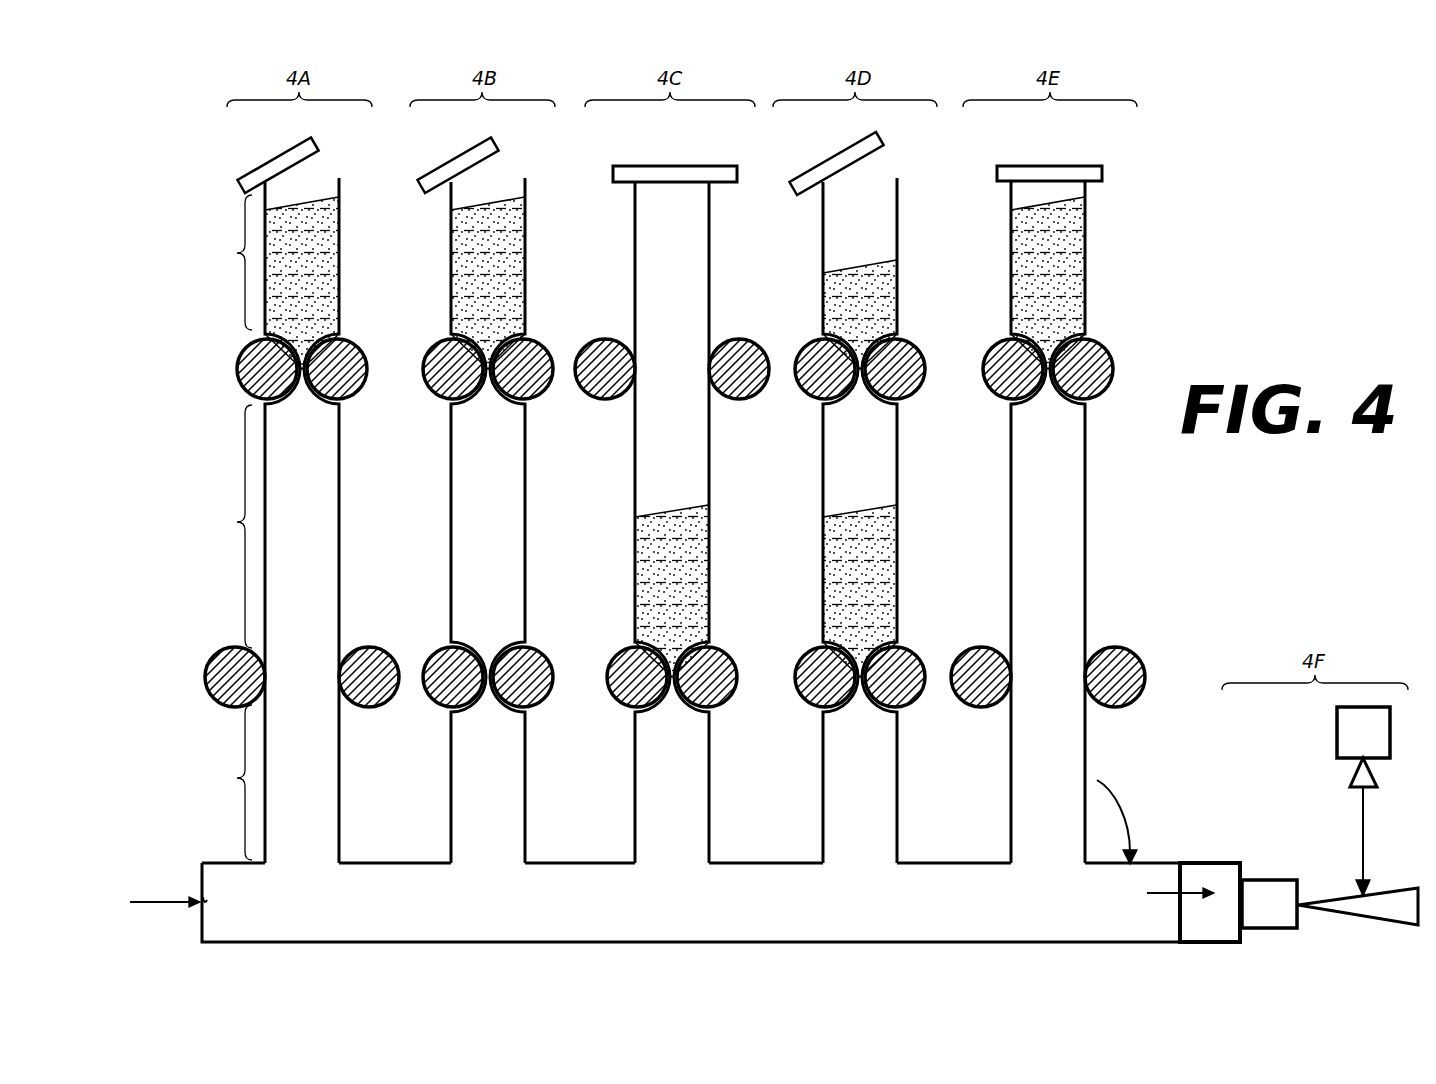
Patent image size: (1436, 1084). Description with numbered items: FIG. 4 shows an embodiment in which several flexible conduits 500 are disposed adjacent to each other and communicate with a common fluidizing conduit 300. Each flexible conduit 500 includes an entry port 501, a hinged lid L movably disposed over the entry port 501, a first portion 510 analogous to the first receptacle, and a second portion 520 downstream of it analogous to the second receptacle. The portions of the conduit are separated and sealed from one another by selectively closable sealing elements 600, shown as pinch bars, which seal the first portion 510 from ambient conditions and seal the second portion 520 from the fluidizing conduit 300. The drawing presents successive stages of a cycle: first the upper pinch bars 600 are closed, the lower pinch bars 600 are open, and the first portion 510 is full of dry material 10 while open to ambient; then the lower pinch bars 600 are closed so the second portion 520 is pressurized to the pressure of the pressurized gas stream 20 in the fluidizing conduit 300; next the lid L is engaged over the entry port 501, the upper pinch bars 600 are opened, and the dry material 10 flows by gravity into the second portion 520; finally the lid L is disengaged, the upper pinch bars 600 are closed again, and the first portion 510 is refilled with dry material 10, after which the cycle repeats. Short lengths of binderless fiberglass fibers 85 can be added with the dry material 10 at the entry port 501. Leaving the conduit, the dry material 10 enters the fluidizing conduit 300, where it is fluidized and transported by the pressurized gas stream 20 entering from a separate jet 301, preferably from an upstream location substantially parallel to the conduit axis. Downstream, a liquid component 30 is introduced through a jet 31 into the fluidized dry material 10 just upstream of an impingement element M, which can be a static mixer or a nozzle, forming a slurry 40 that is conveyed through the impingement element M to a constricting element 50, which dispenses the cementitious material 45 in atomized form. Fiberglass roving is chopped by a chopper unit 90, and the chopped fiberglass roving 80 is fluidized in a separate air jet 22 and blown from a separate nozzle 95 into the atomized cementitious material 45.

The dry material 10 is at (718, 437).
The binderless fiberglass fibers 85 is at (457, 234).
The pressurized gas stream 20 is at (150, 902).
The separate air jet 22 is at (1363, 812).
The liquid component 30 is at (1122, 801).
The jet 31 is at (1130, 868).
The slurry 40 is at (1160, 895).
The cementitious material 45 is at (1395, 895).
The constricting element 50 is at (1283, 916).
The chopped fiberglass roving 80 is at (1363, 828).
The chopper unit 90 is at (1375, 746).
The separate nozzle 95 is at (1380, 772).
The fluidizing conduit 300 is at (677, 901).
The separate jet 301 is at (205, 900).
The flexible conduit 500 is at (341, 182).
The entry port 501 is at (312, 170).
The first portion 510 is at (228, 262).
The second portion 520 is at (224, 526).
The sealing elements 600 is at (255, 362).
The hinged lid L is at (268, 168).
The impingement element M is at (1210, 873).